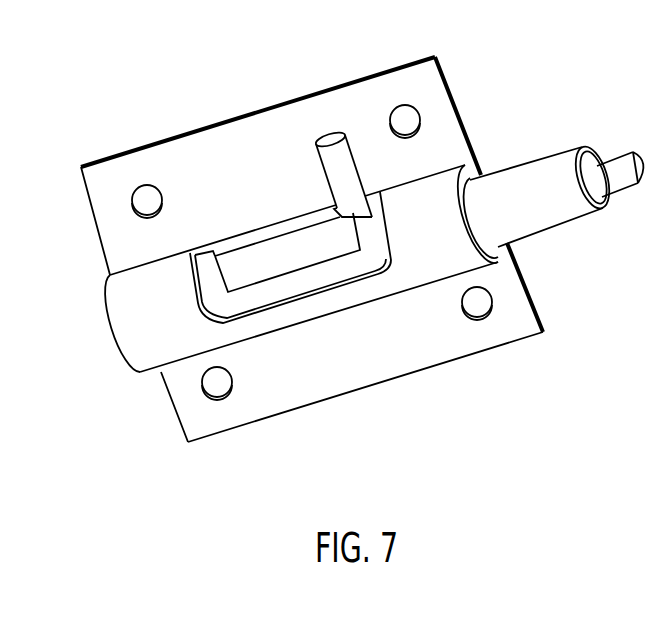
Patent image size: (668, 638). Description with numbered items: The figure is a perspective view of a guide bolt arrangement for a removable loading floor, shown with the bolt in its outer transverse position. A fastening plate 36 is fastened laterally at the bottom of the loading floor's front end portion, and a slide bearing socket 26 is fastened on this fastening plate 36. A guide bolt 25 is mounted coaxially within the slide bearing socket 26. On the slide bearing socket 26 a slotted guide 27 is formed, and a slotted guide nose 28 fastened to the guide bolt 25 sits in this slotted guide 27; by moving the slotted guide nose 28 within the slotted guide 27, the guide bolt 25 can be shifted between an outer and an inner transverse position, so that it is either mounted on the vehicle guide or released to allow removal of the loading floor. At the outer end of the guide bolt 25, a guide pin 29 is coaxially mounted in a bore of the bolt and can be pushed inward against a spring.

The fastening plate 36 is at (236, 141).
The slide bearing socket 26 is at (132, 330).
The slotted guide 27 is at (310, 306).
The slotted guide nose 28 is at (342, 162).
The guide bolt 25 is at (537, 180).
The guide pin 29 is at (620, 164).